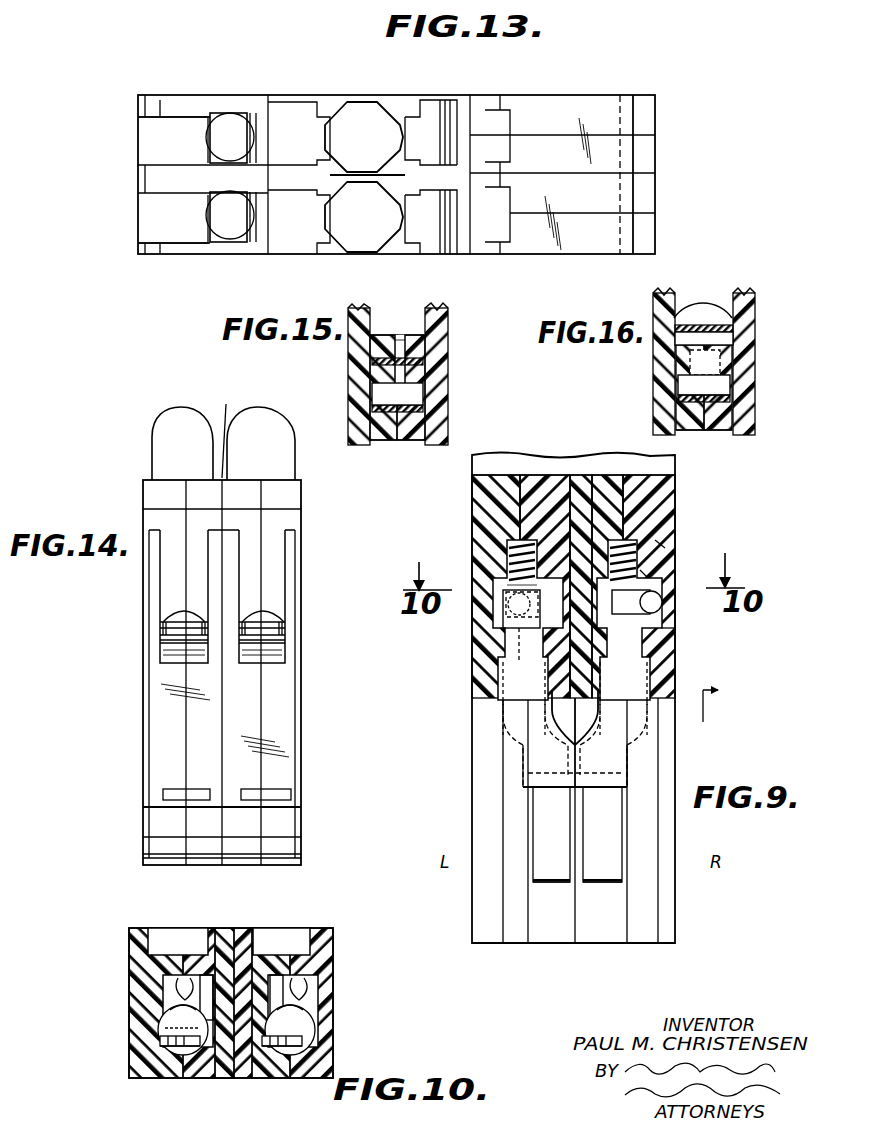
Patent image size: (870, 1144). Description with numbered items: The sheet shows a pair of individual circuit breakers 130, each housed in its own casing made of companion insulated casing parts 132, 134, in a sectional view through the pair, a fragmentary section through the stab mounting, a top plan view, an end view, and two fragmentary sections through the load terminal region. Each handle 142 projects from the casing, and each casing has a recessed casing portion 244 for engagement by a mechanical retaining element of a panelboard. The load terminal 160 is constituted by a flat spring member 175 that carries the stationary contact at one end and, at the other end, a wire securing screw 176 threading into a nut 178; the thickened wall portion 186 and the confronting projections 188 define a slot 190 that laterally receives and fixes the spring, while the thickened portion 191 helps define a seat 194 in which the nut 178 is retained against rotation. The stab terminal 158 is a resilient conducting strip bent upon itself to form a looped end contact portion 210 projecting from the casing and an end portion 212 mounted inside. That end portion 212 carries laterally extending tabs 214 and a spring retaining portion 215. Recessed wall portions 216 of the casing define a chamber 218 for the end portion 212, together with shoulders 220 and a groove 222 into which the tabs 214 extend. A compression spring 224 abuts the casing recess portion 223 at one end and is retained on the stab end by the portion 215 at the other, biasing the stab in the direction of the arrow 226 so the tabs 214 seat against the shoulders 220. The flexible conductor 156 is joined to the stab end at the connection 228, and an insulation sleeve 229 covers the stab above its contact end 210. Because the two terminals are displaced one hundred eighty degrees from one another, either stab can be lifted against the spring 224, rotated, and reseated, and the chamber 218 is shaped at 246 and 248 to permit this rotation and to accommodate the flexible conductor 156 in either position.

In FIG. 13, the circuit breaker 130 is at (662, 122).
In FIG. 14, the circuit breaker 130 is at (140, 475).
In FIG. 9, the circuit breaker 130 is at (680, 673).
In FIG. 13, the casing part 132 is at (583, 97).
In FIG. 15, the casing part 132 is at (343, 312).
In FIG. 16, the casing part 132 is at (655, 414).
In FIG. 14, the casing part 132 is at (152, 485).
In FIG. 9, the casing part 132 is at (676, 500).
In FIG. 10, the casing part 132 is at (335, 948).
In FIG. 13, the casing part 134 is at (658, 140).
In FIG. 15, the casing part 134 is at (449, 312).
In FIG. 16, the casing part 134 is at (752, 386).
In FIG. 14, the casing part 134 is at (226, 430).
In FIG. 9, the casing part 134 is at (584, 473).
In FIG. 10, the casing part 134 is at (258, 938).
In FIG. 13, the handle 142 is at (362, 118).
In FIG. 14, the handle 142 is at (178, 412).
In FIG. 9, the flexible conductor 156 is at (662, 603).
In FIG. 10, the flexible conductor 156 is at (186, 982).
In FIG. 9, the stab terminal 158 is at (548, 806).
In FIG. 13, the load terminal 160 is at (216, 124).
In FIG. 14, the load terminal 160 is at (170, 633).
In FIG. 15, the flat spring member 175 is at (410, 345).
In FIG. 16, the flat spring member 175 is at (740, 316).
In FIG. 13, the wire securing screw 176 is at (240, 128).
In FIG. 16, the wire securing screw 176 is at (705, 303).
In FIG. 14, the wire securing screw 176 is at (178, 609).
In FIG. 16, the nut 178 is at (736, 329).
In FIG. 13, the thickened wall portion 186 is at (178, 120).
In FIG. 15, the thickened wall portion 186 is at (404, 352).
In FIG. 14, the thickened wall portion 186 is at (168, 656).
In FIG. 15, the projection 188 is at (376, 361).
In FIG. 15, the slot 190 is at (415, 375).
In FIG. 16, the thickened portion 191 is at (684, 371).
In FIG. 16, the seat 194 is at (688, 360).
In FIG. 9, the looped end contact portion 210 is at (603, 884).
In FIG. 9, the end portion 212 is at (500, 590).
In FIG. 9, the tab 214 is at (484, 610).
In FIG. 10, the tab 214 is at (165, 1040).
In FIG. 9, the spring retaining portion 215 is at (510, 556).
In FIG. 10, the spring retaining portion 215 is at (318, 1036).
In FIG. 9, the recessed wall portion 216 is at (585, 530).
In FIG. 9, the chamber 218 is at (650, 575).
In FIG. 10, the chamber 218 is at (210, 985).
In FIG. 9, the shoulder 220 is at (718, 652).
In FIG. 9, the groove 222 is at (676, 636).
In FIG. 9, the casing recess portion 223 is at (508, 527).
In FIG. 9, the compression spring 224 is at (662, 540).
In FIG. 9, the arrow 226 is at (738, 706).
In FIG. 9, the connection 228 is at (575, 681).
In FIG. 10, the connection 228 is at (172, 1028).
In FIG. 9, the insulation sleeve 229 is at (535, 745).
In FIG. 14, the recessed casing portion 244 is at (294, 818).
In FIG. 10, the chamber shaping 246 is at (155, 1052).
In FIG. 10, the chamber shaping 248 is at (208, 1052).